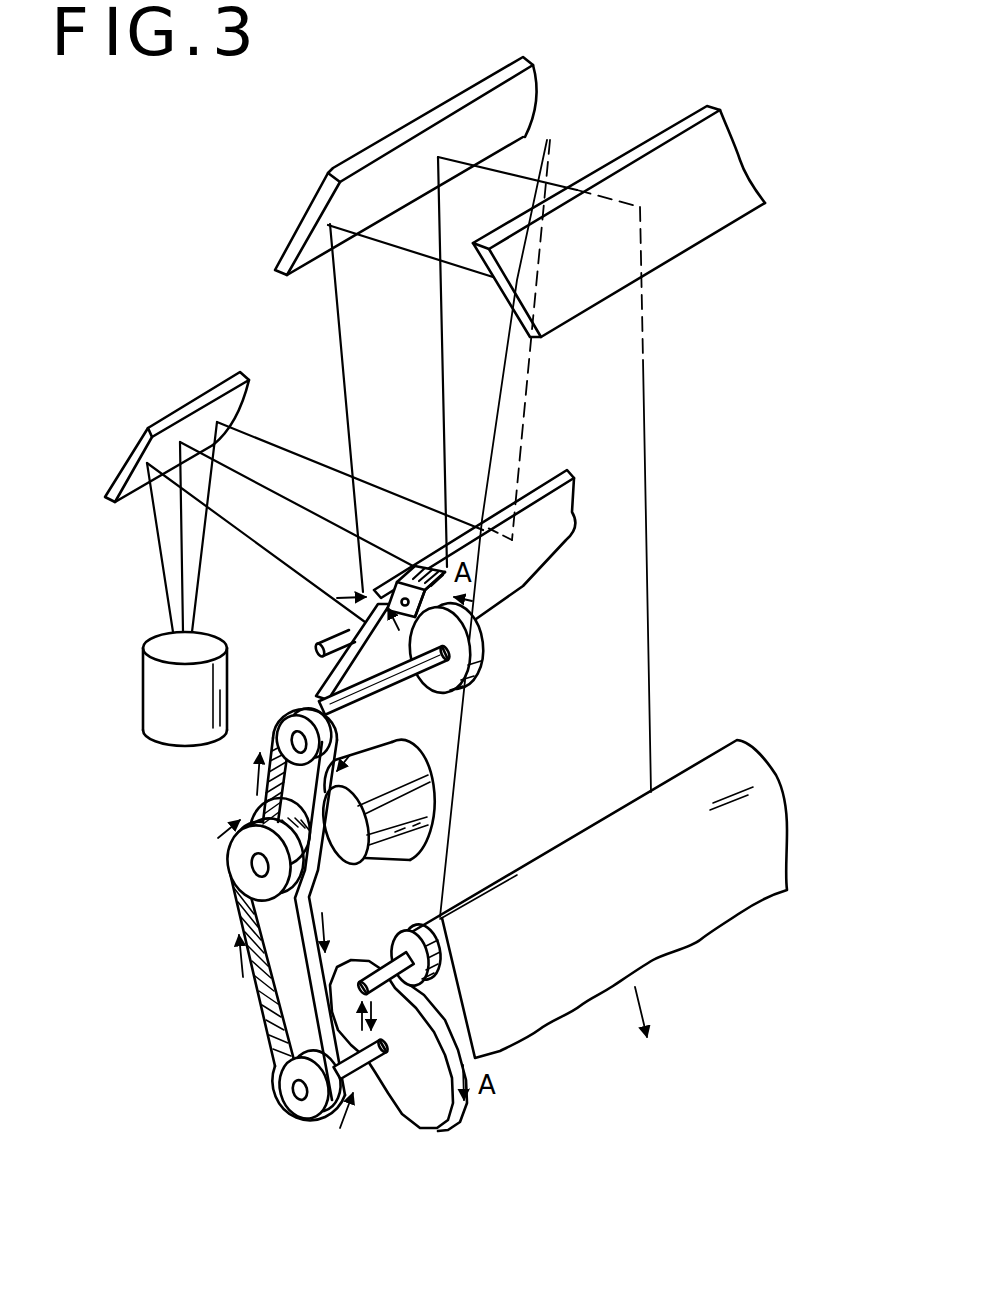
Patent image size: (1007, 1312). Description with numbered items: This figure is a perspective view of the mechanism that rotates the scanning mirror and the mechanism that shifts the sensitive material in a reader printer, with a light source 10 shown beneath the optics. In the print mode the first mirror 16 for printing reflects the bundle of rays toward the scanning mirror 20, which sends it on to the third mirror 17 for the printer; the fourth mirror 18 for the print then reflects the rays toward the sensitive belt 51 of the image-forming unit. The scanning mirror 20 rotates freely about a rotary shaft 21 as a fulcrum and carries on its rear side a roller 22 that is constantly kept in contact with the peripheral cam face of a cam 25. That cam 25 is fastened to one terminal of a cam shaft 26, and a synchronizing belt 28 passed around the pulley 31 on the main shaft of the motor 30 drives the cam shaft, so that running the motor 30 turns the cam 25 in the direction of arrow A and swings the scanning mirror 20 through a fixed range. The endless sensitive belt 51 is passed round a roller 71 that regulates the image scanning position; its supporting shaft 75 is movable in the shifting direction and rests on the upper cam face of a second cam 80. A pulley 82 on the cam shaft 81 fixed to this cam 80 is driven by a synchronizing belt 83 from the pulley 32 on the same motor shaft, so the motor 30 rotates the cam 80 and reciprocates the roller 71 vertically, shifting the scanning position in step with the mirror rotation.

The lamp 10 is at (150, 689).
The first mirror for printing 16 is at (193, 423).
The third mirror for the printer 17 is at (389, 163).
The fourth mirror for the print 18 is at (487, 248).
The scanning mirror 20 is at (547, 478).
The rotary shaft 21 is at (337, 637).
The roller 22 is at (420, 567).
The cam 25 is at (494, 659).
The cam shaft 26 is at (393, 682).
The synchronizing belt 28 is at (272, 748).
The motor 30 is at (397, 832).
The pulley 31 is at (278, 813).
The pulley 32 is at (230, 866).
The sensitive belt 51 is at (768, 835).
The roller 71 is at (440, 962).
The supporting shaft 75 is at (381, 963).
The cam 80 is at (432, 1120).
The cam shaft 81 is at (377, 1087).
The pulley 82 is at (287, 1107).
The synchronizing belt 83 is at (257, 1015).